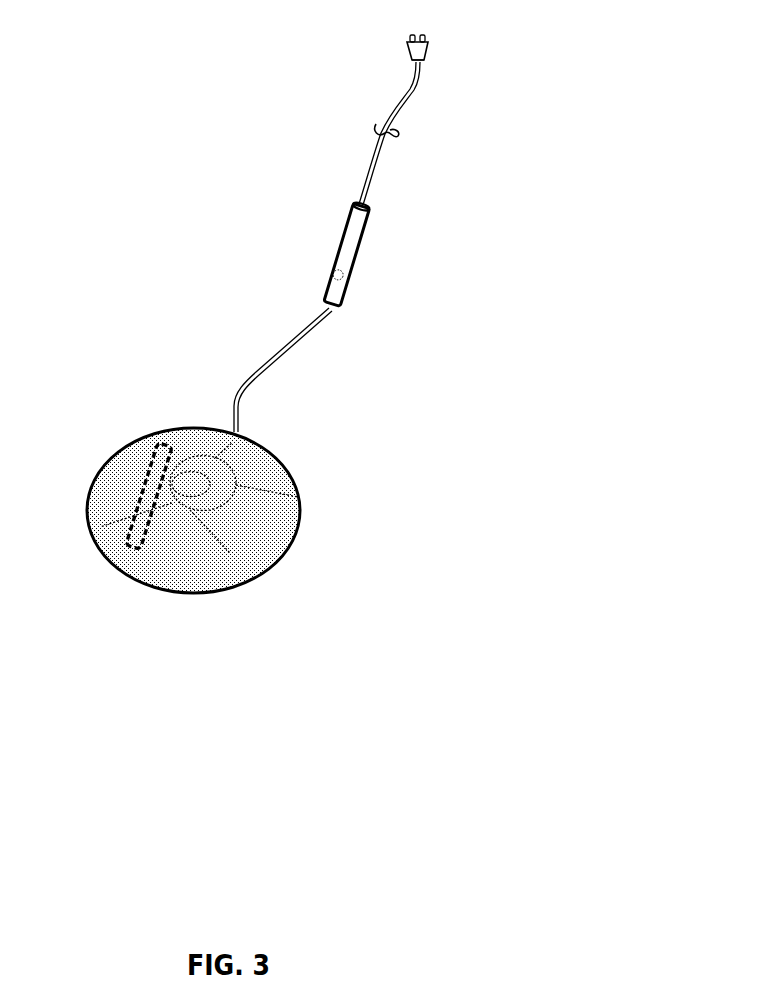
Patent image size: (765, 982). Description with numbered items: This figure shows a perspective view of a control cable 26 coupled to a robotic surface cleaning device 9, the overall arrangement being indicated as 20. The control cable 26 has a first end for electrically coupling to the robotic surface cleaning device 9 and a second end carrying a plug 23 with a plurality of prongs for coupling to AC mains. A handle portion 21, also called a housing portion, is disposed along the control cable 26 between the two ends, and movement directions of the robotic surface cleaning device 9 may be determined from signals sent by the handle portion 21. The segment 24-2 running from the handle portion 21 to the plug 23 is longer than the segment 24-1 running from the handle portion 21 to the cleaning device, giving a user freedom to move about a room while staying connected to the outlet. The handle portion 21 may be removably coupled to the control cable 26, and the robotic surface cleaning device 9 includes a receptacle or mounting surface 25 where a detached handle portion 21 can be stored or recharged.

The charging system 20 is at (109, 63).
The robotic surface cleaning device 9 is at (198, 428).
The receptacle or mounting surface 25 is at (153, 452).
The segment of the control cable 24-1 is at (258, 373).
The handle portion 21 is at (348, 240).
The segment of the control cable 24-2 is at (363, 165).
The control cable 26 is at (363, 101).
The plug 23 is at (407, 46).